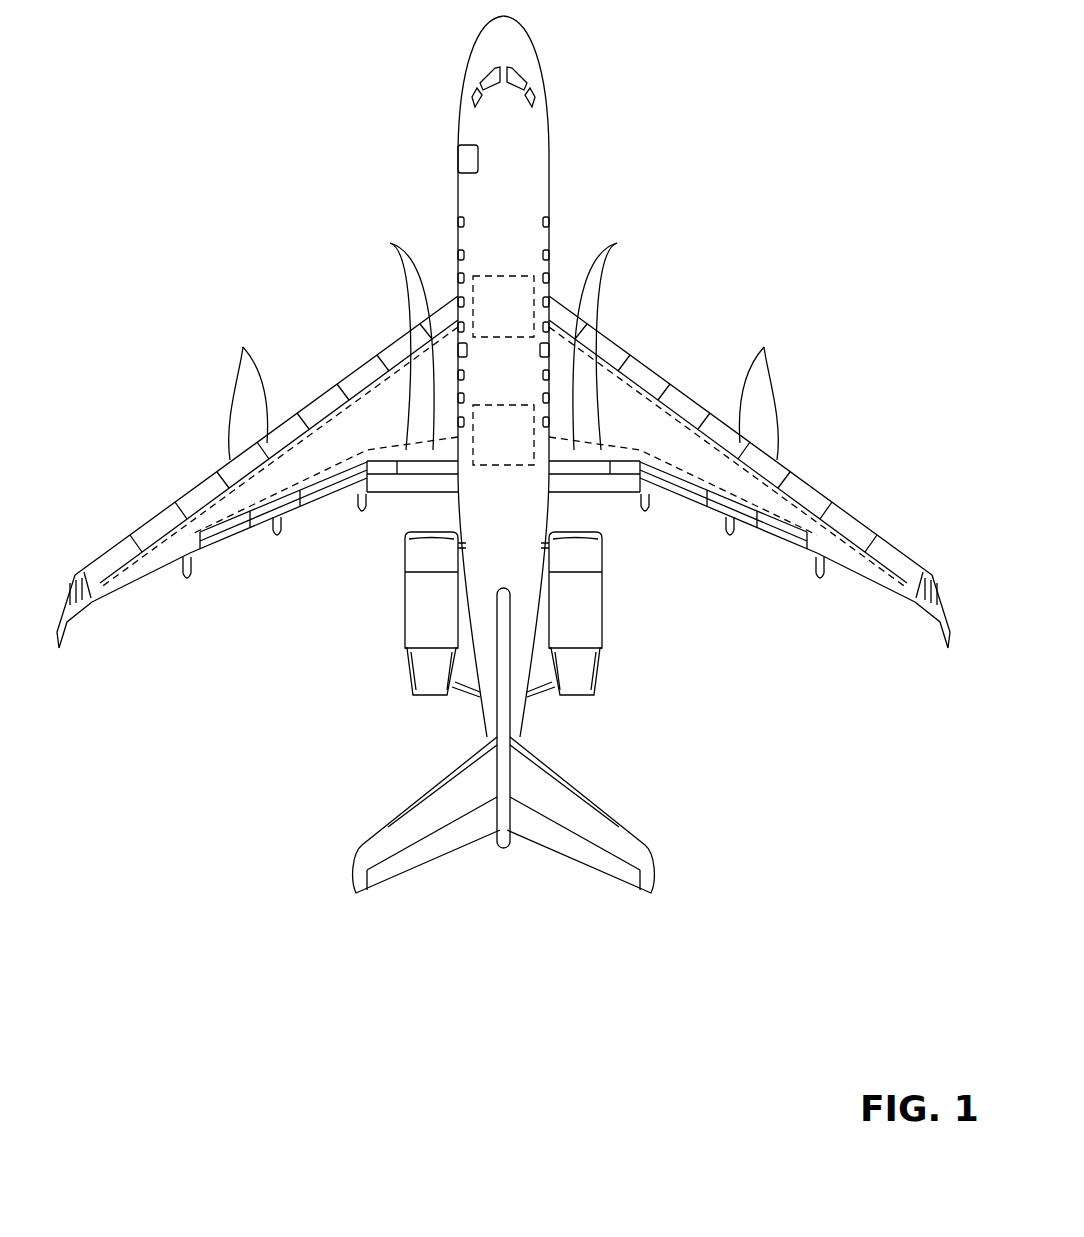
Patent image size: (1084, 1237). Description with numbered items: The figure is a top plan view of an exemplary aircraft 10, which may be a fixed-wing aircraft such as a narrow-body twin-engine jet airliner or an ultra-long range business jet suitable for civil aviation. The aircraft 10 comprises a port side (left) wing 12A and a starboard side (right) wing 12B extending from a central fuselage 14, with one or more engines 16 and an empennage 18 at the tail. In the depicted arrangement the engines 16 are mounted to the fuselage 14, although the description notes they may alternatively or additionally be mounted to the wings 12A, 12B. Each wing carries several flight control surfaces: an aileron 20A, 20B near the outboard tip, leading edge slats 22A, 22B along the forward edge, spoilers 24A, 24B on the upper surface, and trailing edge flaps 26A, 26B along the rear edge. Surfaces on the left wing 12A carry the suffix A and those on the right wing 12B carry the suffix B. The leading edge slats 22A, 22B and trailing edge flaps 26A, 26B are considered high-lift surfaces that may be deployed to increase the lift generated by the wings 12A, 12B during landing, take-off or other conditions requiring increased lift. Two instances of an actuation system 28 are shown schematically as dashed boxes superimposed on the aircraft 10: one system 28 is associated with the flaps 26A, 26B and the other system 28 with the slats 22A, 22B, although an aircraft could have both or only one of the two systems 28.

The aircraft 10 is at (668, 70).
The port side wing 12A is at (362, 328).
The starboard side wing 12B is at (755, 467).
The fuselage 14 is at (519, 164).
The engines 16 is at (420, 636).
The empennage 18 is at (700, 876).
The aileron 20A is at (130, 583).
The aileron 20B is at (917, 639).
The leading edge slat 22A is at (357, 380).
The leading edge slat 22B is at (758, 423).
The spoiler 24A is at (290, 578).
The spoiler 24B is at (677, 410).
The trailing edge flap 26A is at (388, 487).
The trailing edge flap 26B is at (720, 561).
The system for actuating high-lift flight control surfaces 28 is at (523, 319).